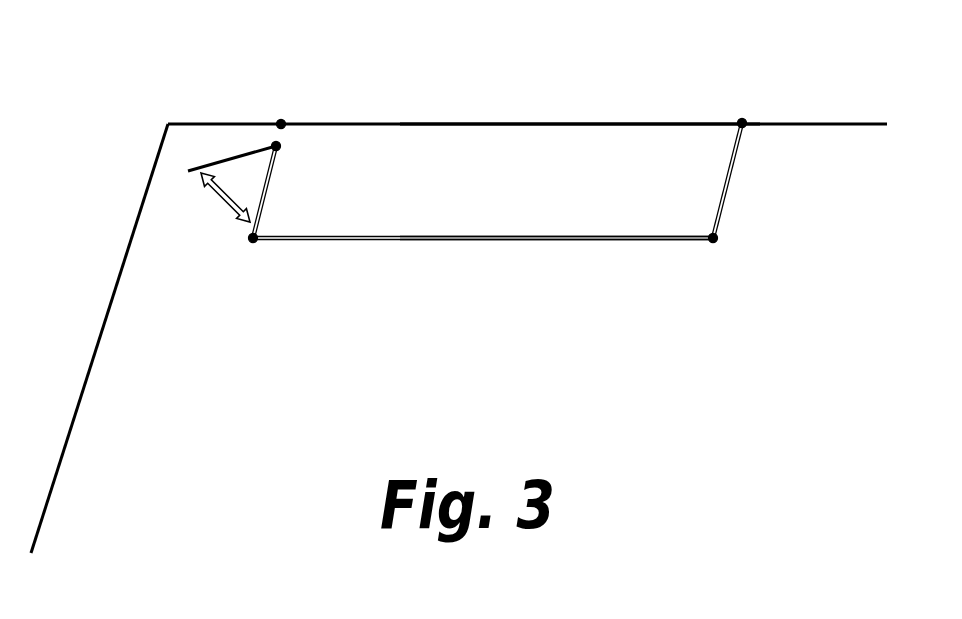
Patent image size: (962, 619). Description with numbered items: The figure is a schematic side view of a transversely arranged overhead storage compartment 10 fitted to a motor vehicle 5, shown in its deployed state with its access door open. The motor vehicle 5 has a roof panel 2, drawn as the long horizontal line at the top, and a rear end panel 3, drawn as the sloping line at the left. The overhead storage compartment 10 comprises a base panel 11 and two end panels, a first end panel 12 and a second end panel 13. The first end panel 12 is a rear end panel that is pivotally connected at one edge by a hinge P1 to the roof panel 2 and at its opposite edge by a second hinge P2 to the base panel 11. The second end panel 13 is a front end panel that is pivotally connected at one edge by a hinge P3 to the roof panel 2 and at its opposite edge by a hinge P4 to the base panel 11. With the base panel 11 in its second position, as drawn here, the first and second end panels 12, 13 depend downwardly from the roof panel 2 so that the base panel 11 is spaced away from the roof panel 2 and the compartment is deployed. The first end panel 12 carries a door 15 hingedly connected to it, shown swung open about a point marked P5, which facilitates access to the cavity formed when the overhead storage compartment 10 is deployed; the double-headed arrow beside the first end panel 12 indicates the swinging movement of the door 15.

The roof panel 2 is at (358, 123).
The motor vehicle 5 is at (519, 112).
The rear end panel 3 is at (150, 185).
The door 15 is at (238, 155).
The first end panel 12 is at (252, 223).
The base panel 11 is at (353, 242).
The overhead storage compartment 10 is at (630, 249).
The second end panel 13 is at (730, 182).
The hinge P1 is at (281, 124).
The second hinge P2 is at (253, 238).
The hinge P3 is at (742, 123).
The hinge P4 is at (713, 238).
The point P5 is at (276, 146).